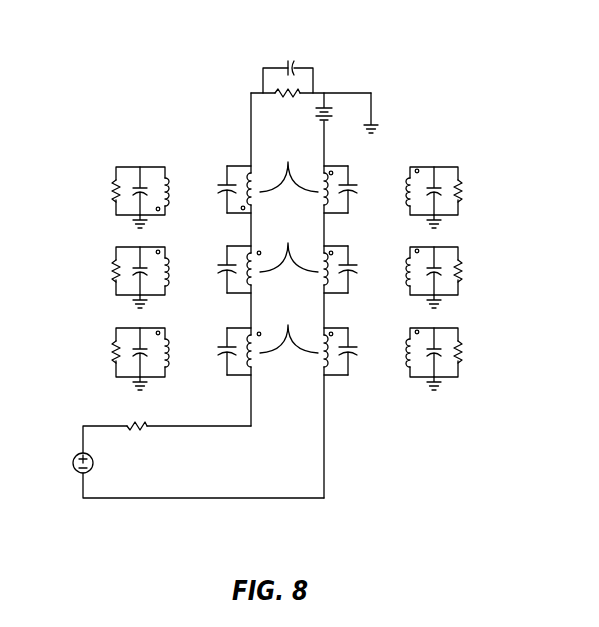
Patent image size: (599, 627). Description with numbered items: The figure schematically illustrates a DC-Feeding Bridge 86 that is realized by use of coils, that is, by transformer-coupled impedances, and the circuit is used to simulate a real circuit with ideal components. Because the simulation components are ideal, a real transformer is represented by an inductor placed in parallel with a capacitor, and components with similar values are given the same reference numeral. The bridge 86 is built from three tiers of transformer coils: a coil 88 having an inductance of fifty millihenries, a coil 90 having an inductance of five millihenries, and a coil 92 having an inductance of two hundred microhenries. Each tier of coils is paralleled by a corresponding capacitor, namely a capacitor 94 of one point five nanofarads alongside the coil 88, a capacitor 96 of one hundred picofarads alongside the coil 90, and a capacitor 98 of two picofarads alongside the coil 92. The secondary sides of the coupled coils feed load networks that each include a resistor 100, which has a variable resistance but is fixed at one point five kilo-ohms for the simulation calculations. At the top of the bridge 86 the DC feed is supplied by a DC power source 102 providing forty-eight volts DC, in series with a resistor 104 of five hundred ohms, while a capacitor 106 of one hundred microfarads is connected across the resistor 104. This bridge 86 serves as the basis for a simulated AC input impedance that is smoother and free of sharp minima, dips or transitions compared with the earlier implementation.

The DC-Feeding Bridge 86 is at (193, 84).
The coil 88 is at (409, 184).
The coil 90 is at (409, 265).
The coil 92 is at (409, 345).
The capacitor 94 is at (132, 178).
The capacitor 96 is at (130, 264).
The capacitor 98 is at (130, 345).
The resistor 100 is at (112, 190).
The DC power source 102 is at (329, 108).
The resistor 104 is at (288, 98).
The capacitor 106 is at (286, 62).